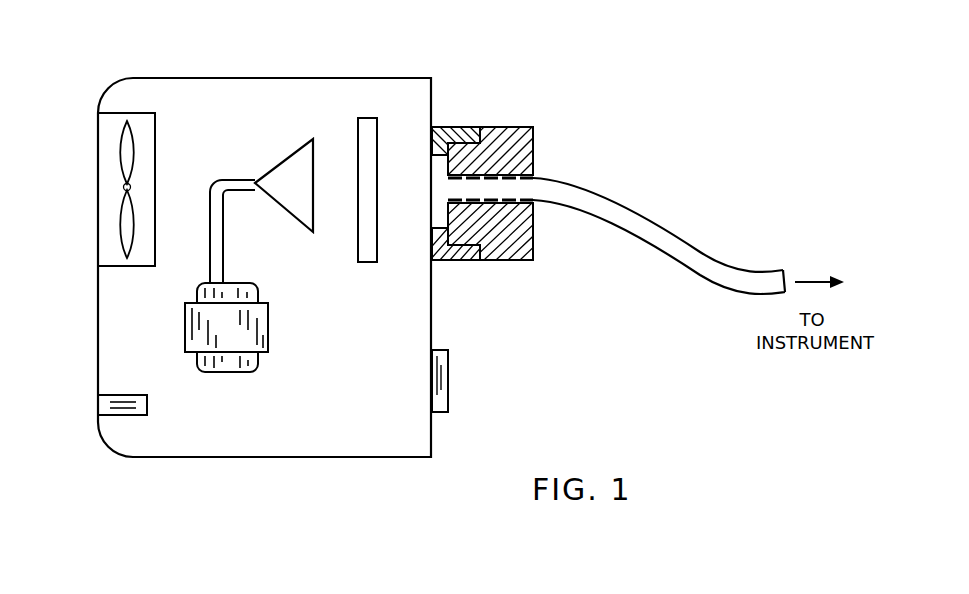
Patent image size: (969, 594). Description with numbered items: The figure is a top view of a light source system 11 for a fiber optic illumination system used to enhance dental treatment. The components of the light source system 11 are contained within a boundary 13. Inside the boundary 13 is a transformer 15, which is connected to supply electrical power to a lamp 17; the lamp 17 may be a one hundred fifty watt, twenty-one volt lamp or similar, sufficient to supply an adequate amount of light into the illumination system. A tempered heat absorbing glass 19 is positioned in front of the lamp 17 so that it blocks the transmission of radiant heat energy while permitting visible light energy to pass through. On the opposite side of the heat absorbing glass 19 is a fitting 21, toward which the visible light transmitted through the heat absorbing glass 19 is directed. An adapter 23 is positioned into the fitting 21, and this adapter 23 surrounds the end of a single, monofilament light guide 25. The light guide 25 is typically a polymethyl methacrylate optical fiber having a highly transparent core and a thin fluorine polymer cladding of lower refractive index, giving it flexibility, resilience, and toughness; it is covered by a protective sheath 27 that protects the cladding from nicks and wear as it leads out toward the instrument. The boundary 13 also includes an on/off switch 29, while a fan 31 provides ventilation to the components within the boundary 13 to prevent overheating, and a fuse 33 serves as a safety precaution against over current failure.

The light source system 11 is at (82, 122).
The boundary 13 is at (315, 78).
The transformer 15 is at (243, 372).
The lamp 17 is at (292, 215).
The tempered heat absorbing glass 19 is at (378, 250).
The fitting 21 is at (445, 127).
The adapter 23 is at (533, 130).
The light guide 25 is at (530, 172).
The protective sheath 27 is at (586, 212).
The on/off switch 29 is at (449, 375).
The fan 31 is at (155, 123).
The fuse 33 is at (127, 395).